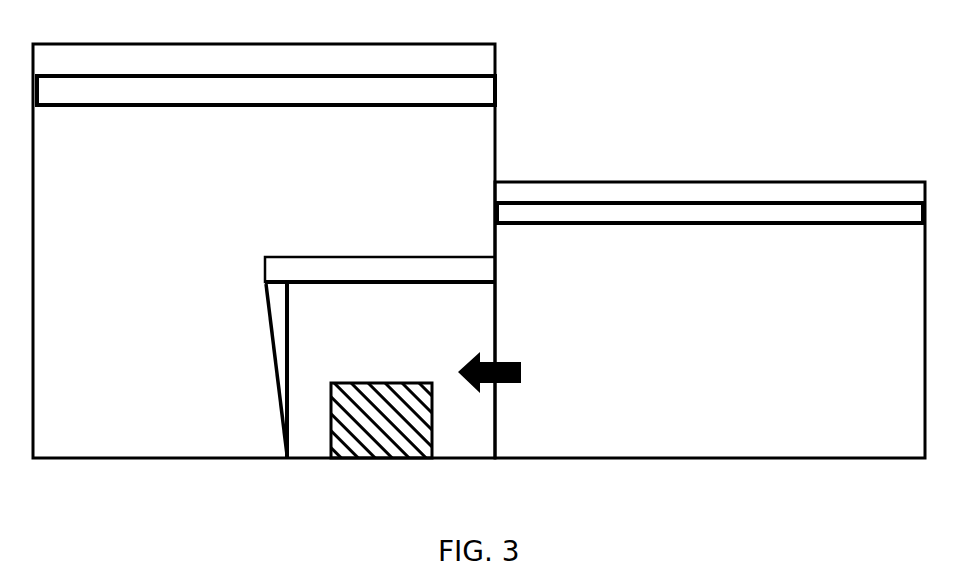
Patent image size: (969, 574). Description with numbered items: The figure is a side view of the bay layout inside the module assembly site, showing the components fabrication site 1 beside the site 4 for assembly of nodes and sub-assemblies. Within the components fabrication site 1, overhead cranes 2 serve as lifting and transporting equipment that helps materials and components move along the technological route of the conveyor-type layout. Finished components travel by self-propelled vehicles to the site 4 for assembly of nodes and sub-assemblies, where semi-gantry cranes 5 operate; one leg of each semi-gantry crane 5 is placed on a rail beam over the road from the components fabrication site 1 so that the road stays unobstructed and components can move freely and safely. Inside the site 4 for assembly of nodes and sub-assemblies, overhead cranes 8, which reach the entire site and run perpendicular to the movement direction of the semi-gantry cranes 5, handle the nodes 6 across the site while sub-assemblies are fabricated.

The components fabrication site 1 is at (710, 320).
The overhead cranes 2 is at (711, 136).
The site for assembly of nodes and sub-assemblies 4 is at (264, 251).
The semi-gantry cranes 5 is at (254, 384).
The nodes 6 is at (302, 445).
The overhead cranes 8 is at (321, 56).